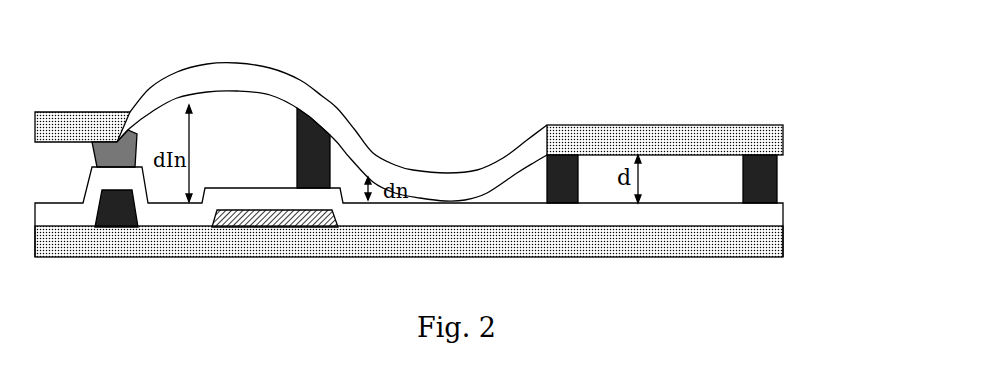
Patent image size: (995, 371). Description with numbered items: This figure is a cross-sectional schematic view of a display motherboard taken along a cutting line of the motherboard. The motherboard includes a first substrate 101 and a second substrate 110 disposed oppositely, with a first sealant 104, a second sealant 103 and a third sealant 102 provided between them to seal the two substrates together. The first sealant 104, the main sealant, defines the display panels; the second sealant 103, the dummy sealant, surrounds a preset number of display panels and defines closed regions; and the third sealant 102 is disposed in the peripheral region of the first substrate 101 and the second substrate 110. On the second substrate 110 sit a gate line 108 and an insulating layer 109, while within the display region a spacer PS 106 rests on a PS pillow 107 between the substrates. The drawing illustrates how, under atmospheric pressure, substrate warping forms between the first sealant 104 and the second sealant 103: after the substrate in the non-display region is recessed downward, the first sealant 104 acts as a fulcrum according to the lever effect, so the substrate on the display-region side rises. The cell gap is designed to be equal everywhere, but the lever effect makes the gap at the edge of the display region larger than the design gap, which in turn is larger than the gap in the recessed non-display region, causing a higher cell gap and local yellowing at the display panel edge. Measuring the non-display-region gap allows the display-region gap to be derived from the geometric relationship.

The first substrate 101 is at (773, 145).
The third sealant 102 is at (755, 157).
The second sealant 103 is at (572, 157).
The first sealant 104 is at (315, 109).
The spacer PS 106 is at (118, 137).
The PS pillow 107 is at (117, 227).
The gate line 108 is at (290, 222).
The insulating layer 109 is at (425, 218).
The second substrate 110 is at (773, 249).